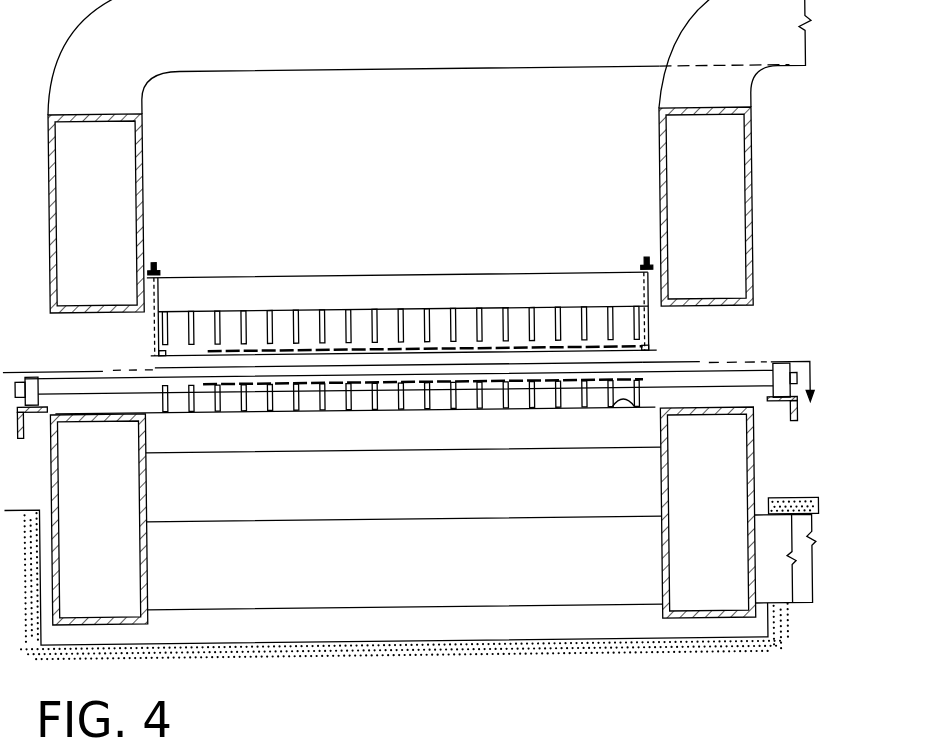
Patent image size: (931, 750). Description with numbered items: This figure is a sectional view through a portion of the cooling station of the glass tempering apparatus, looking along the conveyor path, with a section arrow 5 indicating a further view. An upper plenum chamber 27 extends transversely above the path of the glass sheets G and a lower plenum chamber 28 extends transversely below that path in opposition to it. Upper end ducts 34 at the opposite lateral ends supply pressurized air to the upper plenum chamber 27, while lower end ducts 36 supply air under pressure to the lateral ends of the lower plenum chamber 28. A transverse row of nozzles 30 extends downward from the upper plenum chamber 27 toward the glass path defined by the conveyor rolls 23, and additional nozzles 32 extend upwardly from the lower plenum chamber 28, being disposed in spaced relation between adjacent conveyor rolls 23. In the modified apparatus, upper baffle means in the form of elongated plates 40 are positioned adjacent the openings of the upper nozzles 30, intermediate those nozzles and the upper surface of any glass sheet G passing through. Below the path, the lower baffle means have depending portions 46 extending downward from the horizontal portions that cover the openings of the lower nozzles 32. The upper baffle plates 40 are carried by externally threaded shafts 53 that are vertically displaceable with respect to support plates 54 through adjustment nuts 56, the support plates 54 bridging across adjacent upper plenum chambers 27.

The conveyor rolls 23 is at (69, 372).
The upper plenum chamber 27 is at (390, 279).
The lower plenum chamber 28 is at (343, 457).
The nozzles 30 is at (266, 303).
The nozzles 32 is at (620, 414).
The upper end ducts 34 is at (112, 229).
The lower end ducts 36 is at (109, 525).
The elongated plates 40 is at (310, 321).
The depending portions 46 is at (339, 400).
The externally threaded shafts 53 is at (153, 333).
The support plates 54 is at (158, 277).
The adjustment nuts 56 is at (160, 272).
The section line FIG. 5 is at (798, 400).
The glass sheets G is at (657, 369).